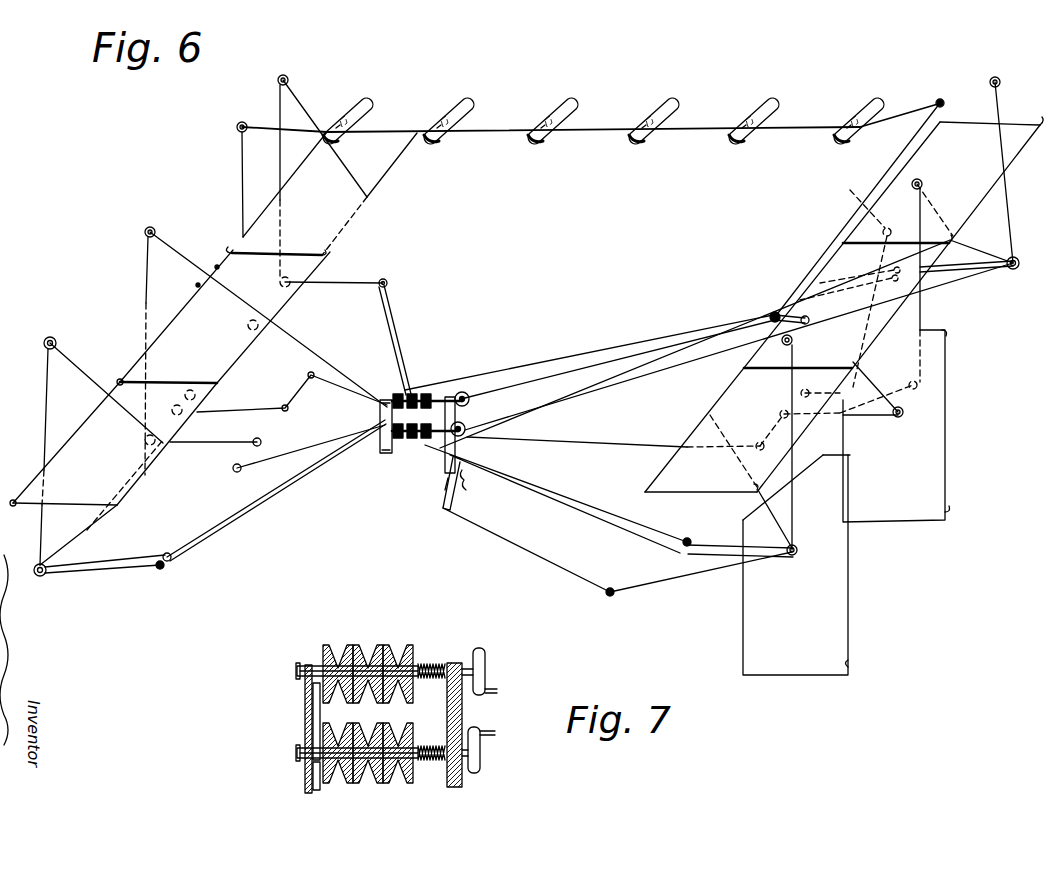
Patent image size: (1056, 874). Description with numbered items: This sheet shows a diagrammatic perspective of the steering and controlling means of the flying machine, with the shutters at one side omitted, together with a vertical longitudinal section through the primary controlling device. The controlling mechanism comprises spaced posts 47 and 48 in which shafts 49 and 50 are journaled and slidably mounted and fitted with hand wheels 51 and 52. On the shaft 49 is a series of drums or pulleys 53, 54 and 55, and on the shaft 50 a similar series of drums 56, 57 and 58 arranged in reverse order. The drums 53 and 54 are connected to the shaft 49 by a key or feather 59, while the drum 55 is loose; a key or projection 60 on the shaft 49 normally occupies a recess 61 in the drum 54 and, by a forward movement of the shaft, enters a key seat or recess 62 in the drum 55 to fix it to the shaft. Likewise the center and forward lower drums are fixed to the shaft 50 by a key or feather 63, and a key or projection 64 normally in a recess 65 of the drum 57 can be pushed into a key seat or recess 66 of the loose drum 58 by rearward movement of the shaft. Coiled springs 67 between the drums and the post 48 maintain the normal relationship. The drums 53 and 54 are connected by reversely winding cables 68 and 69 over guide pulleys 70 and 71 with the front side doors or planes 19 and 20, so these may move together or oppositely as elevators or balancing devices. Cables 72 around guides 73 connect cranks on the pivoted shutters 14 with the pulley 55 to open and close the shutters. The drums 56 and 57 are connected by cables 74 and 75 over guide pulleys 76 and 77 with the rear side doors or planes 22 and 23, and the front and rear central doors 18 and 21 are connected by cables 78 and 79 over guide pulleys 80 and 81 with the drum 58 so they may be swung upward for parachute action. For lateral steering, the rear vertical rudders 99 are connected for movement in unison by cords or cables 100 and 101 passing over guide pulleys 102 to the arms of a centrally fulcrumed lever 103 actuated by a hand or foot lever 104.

In FIG. 6, the pivoted shutters 14 is at (564, 100).
In FIG. 6, the front central door 18 is at (251, 316).
In FIG. 6, the front side door or plane 19 is at (113, 454).
In FIG. 6, the front side door or plane 20 is at (321, 193).
In FIG. 6, the rear central door 21 is at (870, 330).
In FIG. 6, the rear side door or plane 22 is at (842, 307).
In FIG. 6, the rear side door or plane 23 is at (943, 180).
In FIG. 6, the post 47 is at (379, 410).
In FIG. 7, the post 47 is at (305, 726).
In FIG. 7, the post 48 is at (462, 718).
In FIG. 7, the shaft 49 is at (310, 673).
In FIG. 7, the shaft 50 is at (300, 758).
In FIG. 6, the hand wheel 51 is at (470, 398).
In FIG. 7, the hand wheel 51 is at (486, 660).
In FIG. 6, the hand wheel 52 is at (466, 429).
In FIG. 7, the hand wheel 52 is at (483, 748).
In FIG. 6, the drum or pulley 53 is at (430, 394).
In FIG. 7, the drum or pulley 53 is at (416, 648).
In FIG. 6, the drum or pulley 54 is at (415, 393).
In FIG. 7, the drum or pulley 54 is at (367, 645).
In FIG. 6, the drum or pulley 55 is at (396, 393).
In FIG. 7, the drum or pulley 55 is at (325, 656).
In FIG. 6, the drum or pulley 56 is at (395, 440).
In FIG. 7, the drum or pulley 56 is at (338, 743).
In FIG. 6, the drum or pulley 57 is at (410, 440).
In FIG. 7, the drum or pulley 57 is at (368, 743).
In FIG. 6, the drum or pulley 58 is at (425, 440).
In FIG. 7, the drum or pulley 58 is at (398, 743).
In FIG. 7, the key or feather 59 is at (398, 650).
In FIG. 7, the key or projection 60 is at (340, 645).
In FIG. 7, the recess 61 is at (380, 648).
In FIG. 7, the key seat or recess 62 is at (313, 690).
In FIG. 7, the key or feather 63 is at (312, 768).
In FIG. 7, the key or projection 64 is at (335, 793).
In FIG. 7, the recess 65 is at (368, 793).
In FIG. 7, the key seat or recess 66 is at (399, 793).
In FIG. 7, the coiled springs 67 is at (450, 662).
In FIG. 6, the cables 68 is at (404, 310).
In FIG. 6, the cables 69 is at (228, 527).
In FIG. 6, the guide pulley 70 is at (277, 80).
In FIG. 6, the guide pulley 71 is at (42, 345).
In FIG. 6, the cables 72 is at (240, 183).
In FIG. 6, the guides 73 is at (262, 325).
In FIG. 6, the cables 74 is at (580, 515).
In FIG. 6, the cables 75 is at (590, 378).
In FIG. 6, the guide pulley 76 is at (690, 538).
In FIG. 6, the guide pulley 77 is at (1000, 78).
In FIG. 6, the cables 78 is at (145, 297).
In FIG. 6, the cables 79 is at (647, 438).
In FIG. 6, the guide pulley 80 is at (263, 442).
In FIG. 6, the guide pulley 81 is at (800, 395).
In FIG. 6, the rear vertical rudders 99 is at (848, 427).
In FIG. 6, the cords or cables 100 is at (590, 590).
In FIG. 6, the cords or cables 101 is at (750, 318).
In FIG. 6, the guide pulleys 102 is at (613, 587).
In FIG. 6, the centrally fulcrumed lever 103 is at (462, 488).
In FIG. 6, the hand or foot lever 104 is at (445, 480).